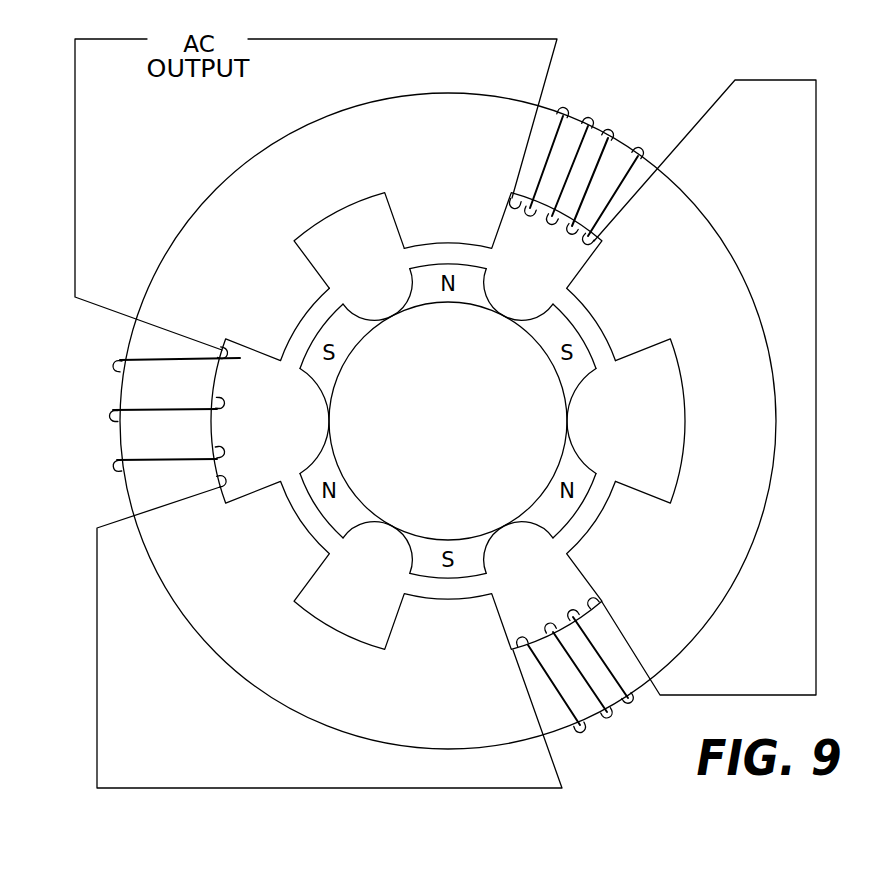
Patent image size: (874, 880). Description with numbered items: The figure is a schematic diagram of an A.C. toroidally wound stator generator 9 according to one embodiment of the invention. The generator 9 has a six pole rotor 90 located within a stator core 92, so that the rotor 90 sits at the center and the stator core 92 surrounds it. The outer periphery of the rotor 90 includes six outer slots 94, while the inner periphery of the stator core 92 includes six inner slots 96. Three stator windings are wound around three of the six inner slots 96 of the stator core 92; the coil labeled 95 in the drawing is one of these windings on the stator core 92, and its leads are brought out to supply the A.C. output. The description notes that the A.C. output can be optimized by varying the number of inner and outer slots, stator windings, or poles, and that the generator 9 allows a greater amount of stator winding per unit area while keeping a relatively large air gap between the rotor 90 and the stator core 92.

The generator 9 is at (569, 78).
The six pole rotor 90 is at (439, 430).
The stator core 92 is at (431, 702).
The outer slots 94 is at (575, 430).
The coil winding 95 is at (598, 113).
The inner slots 96 is at (337, 258).